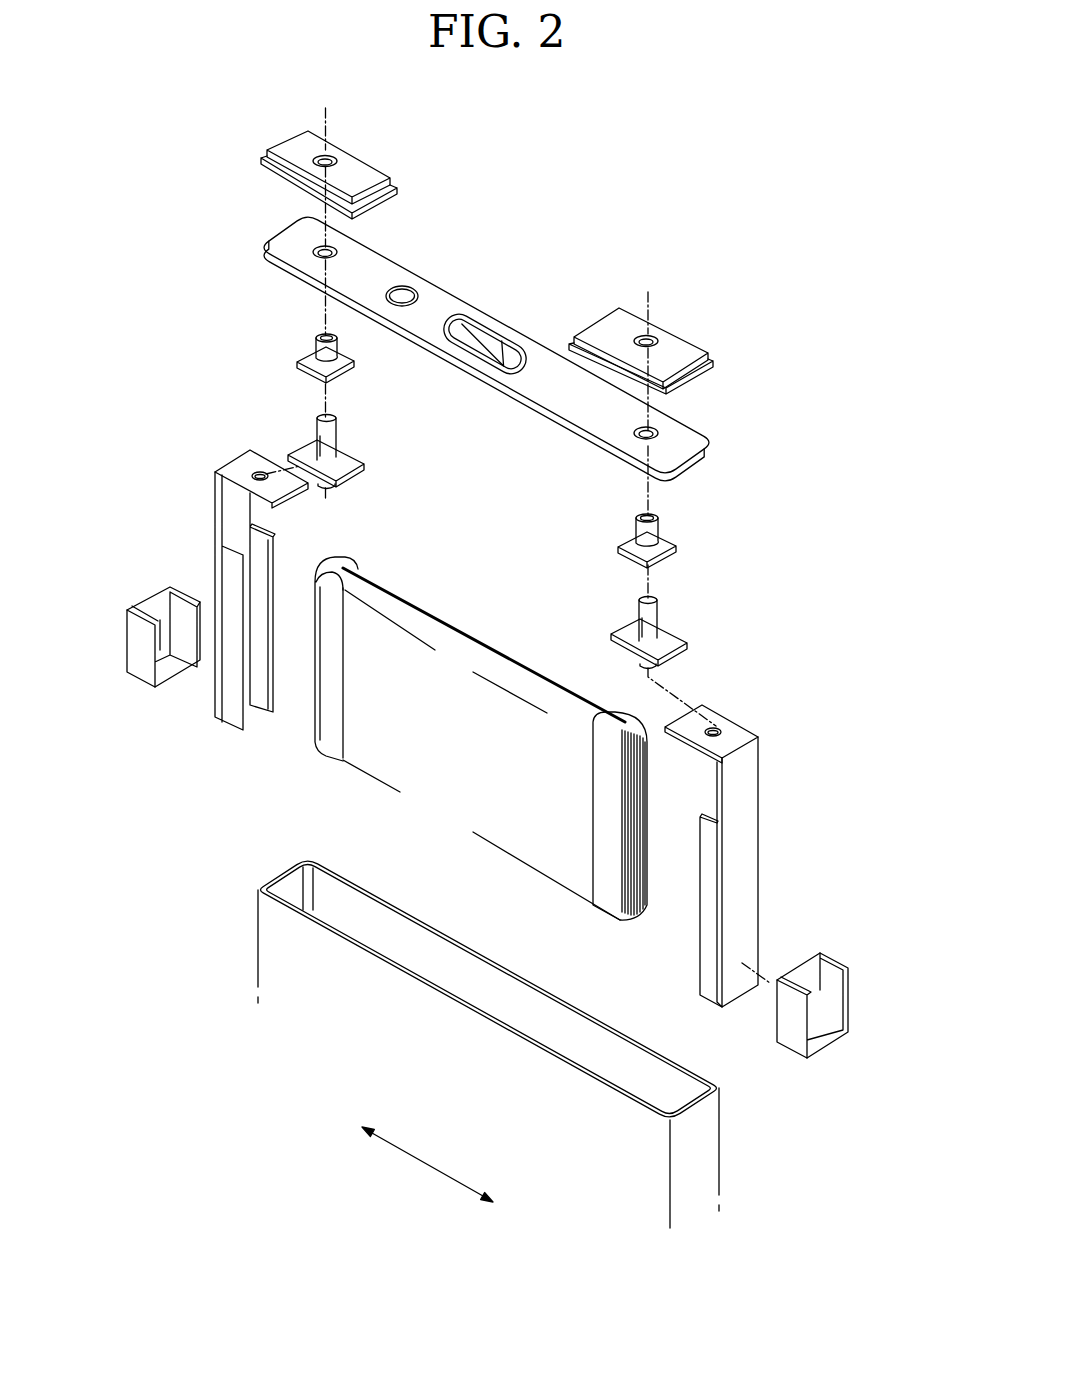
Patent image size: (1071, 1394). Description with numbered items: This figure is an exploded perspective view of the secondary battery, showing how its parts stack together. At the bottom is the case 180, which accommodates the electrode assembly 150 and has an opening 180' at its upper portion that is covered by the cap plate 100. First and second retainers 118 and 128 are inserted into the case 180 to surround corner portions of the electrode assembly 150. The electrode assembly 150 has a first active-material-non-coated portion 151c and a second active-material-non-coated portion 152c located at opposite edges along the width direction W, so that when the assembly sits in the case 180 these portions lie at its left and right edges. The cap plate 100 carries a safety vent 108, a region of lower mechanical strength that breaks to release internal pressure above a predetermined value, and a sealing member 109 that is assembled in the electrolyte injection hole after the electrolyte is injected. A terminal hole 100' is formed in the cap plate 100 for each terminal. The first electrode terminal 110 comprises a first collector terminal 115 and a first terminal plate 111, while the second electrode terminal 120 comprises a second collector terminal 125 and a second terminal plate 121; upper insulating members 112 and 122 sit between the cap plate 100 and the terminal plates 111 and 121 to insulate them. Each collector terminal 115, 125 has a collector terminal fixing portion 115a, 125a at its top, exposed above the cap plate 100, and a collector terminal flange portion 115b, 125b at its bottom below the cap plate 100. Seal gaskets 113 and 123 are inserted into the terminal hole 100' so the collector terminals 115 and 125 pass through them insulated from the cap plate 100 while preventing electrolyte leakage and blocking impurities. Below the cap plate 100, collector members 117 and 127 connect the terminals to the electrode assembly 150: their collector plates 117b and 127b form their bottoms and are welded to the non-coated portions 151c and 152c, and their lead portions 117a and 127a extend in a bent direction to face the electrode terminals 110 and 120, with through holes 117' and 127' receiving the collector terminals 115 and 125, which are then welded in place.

The cap plate 100 is at (482, 333).
The terminal hole 100' is at (482, 342).
The safety vent 108 is at (478, 340).
The sealing member 109 is at (404, 292).
The first electrode terminal 110 is at (686, 316).
The first terminal plate 111 is at (608, 318).
The upper insulating member 112 is at (713, 364).
The seal gasket 113 is at (672, 540).
The first collector terminal 115 is at (713, 623).
The collector terminal fixing portion 115a is at (658, 610).
The collector terminal flange portion 115b is at (688, 642).
The collector member 117 is at (782, 848).
The through hole 117' is at (769, 712).
The lead portion 117a is at (756, 728).
The collector plate 117b is at (750, 804).
The first retainer 118 is at (828, 1050).
The second electrode terminal 120 is at (373, 140).
The second terminal plate 121 is at (296, 147).
The upper insulating member 122 is at (398, 187).
The seal gasket 123 is at (308, 357).
The second collector terminal 125 is at (264, 431).
The collector terminal fixing portion 125a is at (320, 418).
The collector terminal flange portion 125b is at (308, 452).
The collector member 127 is at (189, 581).
The through hole 127' is at (199, 456).
The lead portion 127a is at (216, 470).
The collector plate 127b is at (215, 508).
The second retainer 128 is at (142, 675).
The electrode assembly 150 is at (481, 717).
The first active-material-non-coated portion 151c is at (621, 723).
The second active-material-non-coated portion 152c is at (345, 571).
The case 180 is at (467, 1020).
The opening 180' is at (604, 998).
The width direction W is at (427, 1164).